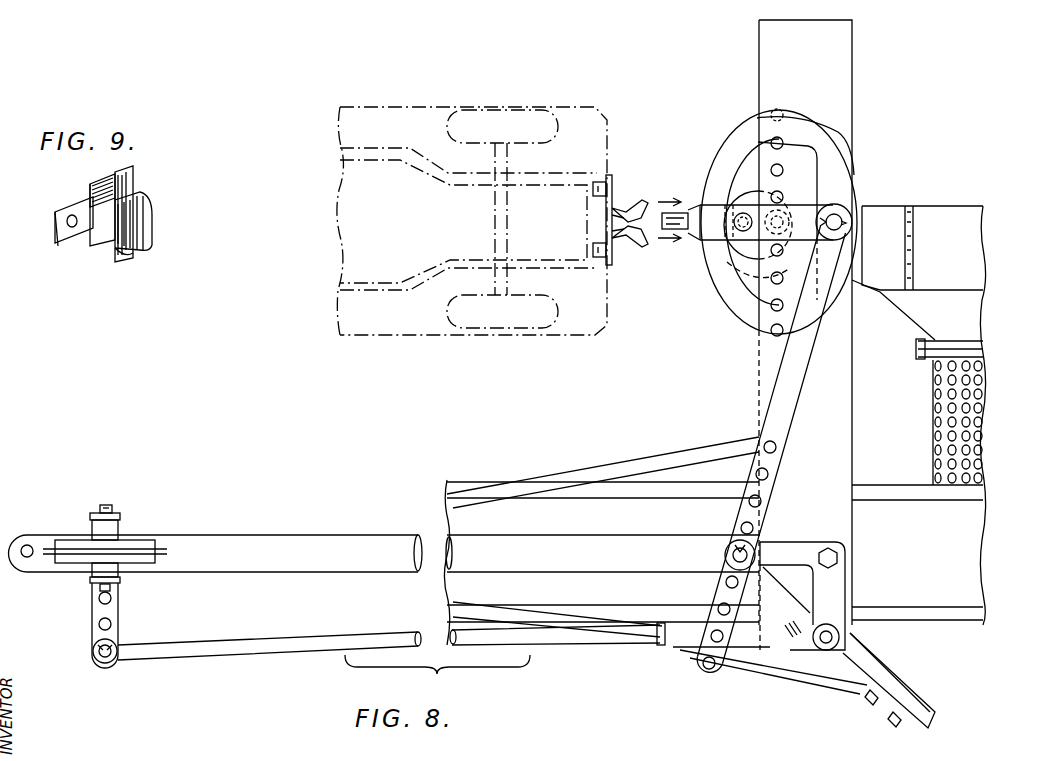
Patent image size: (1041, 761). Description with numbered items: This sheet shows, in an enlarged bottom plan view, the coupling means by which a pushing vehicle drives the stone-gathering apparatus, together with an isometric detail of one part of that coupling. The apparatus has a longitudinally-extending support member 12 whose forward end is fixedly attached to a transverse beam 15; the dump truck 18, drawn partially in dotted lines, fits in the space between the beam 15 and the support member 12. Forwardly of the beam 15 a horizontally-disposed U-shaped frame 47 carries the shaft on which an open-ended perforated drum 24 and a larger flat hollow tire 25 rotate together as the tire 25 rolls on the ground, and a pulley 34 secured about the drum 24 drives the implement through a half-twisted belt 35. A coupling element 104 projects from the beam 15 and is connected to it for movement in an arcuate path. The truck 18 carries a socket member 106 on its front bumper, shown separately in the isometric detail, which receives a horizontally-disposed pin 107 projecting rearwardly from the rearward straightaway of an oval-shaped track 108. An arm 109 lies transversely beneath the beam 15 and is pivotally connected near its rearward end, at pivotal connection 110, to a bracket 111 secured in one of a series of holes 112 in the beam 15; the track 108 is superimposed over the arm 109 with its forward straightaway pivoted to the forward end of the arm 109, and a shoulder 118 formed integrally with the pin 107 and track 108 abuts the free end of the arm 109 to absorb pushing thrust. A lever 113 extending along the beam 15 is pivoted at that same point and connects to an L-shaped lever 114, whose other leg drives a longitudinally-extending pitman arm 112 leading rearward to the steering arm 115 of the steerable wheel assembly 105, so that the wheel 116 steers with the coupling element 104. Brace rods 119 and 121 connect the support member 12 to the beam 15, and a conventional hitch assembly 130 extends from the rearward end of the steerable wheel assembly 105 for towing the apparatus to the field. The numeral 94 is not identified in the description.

In FIG. 8, the support member 12 is at (338, 536).
In FIG. 8, the beam 15 is at (749, 362).
In FIG. 8, the dump truck 18 is at (563, 107).
In FIG. 8, the perforated drum 24 is at (933, 454).
In FIG. 8, the flat tire 25 is at (962, 210).
In FIG. 8, the pulley 34 is at (922, 358).
In FIG. 8, the belt 35 is at (918, 349).
In FIG. 8, the U-shaped frame 47 is at (919, 696).
In FIG. 8, the lower rail 94 is at (955, 622).
In FIG. 8, the coupling element 104 is at (722, 157).
In FIG. 8, the steerable wheel assembly 105 is at (134, 518).
In FIG. 9, the socket member 106 is at (138, 200).
In FIG. 8, the socket member 106 is at (630, 200).
In FIG. 8, the pin 107 is at (741, 231).
In FIG. 8, the oval-shaped track 108 is at (800, 124).
In FIG. 8, the arm 109 is at (788, 212).
In FIG. 8, the pivotal connection 110 is at (755, 232).
In FIG. 8, the bracket 111 is at (768, 250).
In FIG. 8, the pitman arm 112 is at (777, 165).
In FIG. 8, the lever 113 is at (802, 362).
In FIG. 8, the L-shaped lever 114 is at (798, 545).
In FIG. 8, the steering arm 115 is at (118, 610).
In FIG. 8, the wheel 116 is at (160, 542).
In FIG. 8, the shoulder 118 is at (700, 206).
In FIG. 8, the brace rod 119 is at (622, 466).
In FIG. 8, the brace rod 121 is at (478, 610).
In FIG. 8, the hitch assembly 130 is at (30, 535).